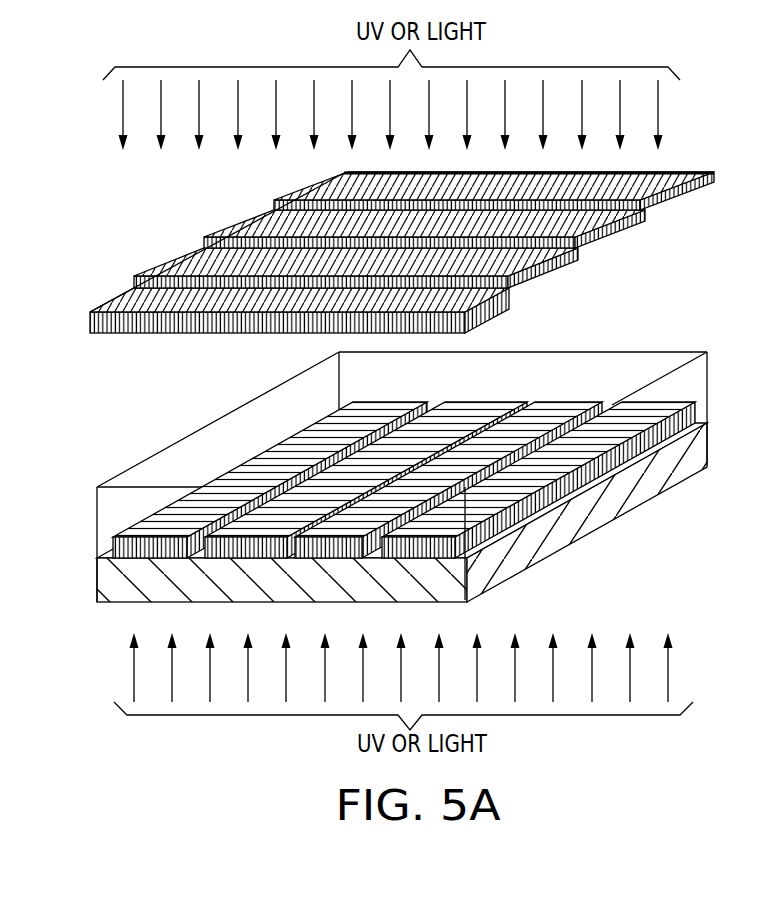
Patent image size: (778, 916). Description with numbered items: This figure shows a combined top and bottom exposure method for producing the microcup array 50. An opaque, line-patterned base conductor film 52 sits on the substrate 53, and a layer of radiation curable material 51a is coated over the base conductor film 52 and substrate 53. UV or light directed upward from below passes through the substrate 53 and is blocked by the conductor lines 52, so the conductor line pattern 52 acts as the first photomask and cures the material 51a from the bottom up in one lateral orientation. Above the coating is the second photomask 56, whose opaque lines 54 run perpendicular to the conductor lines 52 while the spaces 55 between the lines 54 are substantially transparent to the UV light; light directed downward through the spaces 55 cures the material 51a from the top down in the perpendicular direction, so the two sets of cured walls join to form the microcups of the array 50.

The microcup array 50 is at (379, 245).
The radiation curable material 51a is at (103, 502).
The base conductor film 52 is at (125, 545).
The substrate 53 is at (118, 578).
The lines 54 is at (197, 270).
The spaces 55 is at (145, 282).
The second photomask 56 is at (282, 208).